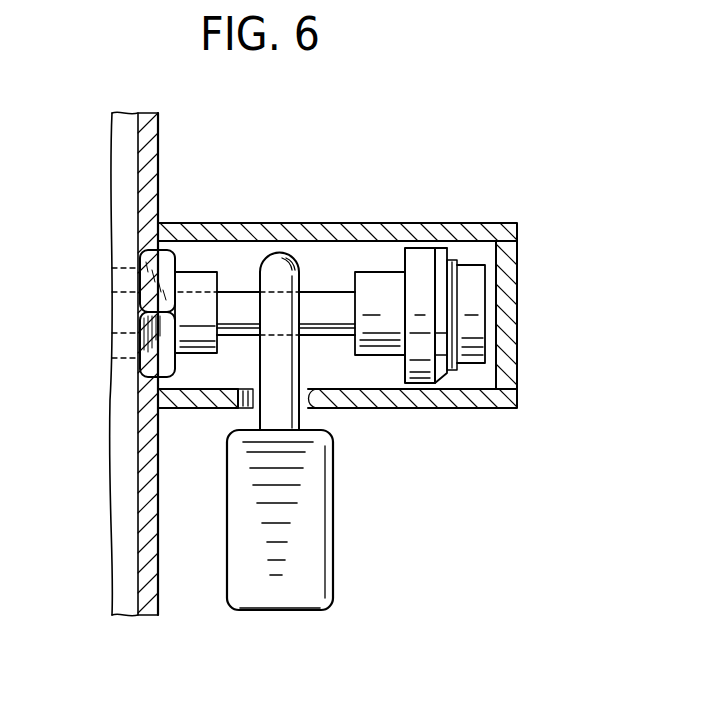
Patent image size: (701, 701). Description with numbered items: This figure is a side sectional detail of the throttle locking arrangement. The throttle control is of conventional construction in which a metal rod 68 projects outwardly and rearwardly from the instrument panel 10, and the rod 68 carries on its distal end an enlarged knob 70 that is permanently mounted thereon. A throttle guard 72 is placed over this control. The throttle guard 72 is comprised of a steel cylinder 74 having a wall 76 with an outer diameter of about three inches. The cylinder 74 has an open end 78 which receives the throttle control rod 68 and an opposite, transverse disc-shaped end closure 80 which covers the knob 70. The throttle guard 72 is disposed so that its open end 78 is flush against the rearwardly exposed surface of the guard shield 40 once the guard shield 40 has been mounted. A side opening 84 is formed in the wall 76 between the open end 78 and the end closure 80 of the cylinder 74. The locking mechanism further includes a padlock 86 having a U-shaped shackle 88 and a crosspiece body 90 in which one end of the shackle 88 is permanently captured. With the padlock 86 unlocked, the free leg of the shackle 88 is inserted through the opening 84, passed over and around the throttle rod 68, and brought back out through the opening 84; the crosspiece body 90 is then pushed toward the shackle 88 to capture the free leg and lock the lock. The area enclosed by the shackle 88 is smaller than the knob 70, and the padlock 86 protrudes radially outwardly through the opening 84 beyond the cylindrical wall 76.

The instrument panel 10 is at (142, 158).
The guard shield 40 is at (165, 573).
The metal rod 68 is at (328, 296).
The enlarged knob 70 is at (422, 255).
The throttle guard 72 is at (462, 418).
The steel cylinder 74 is at (412, 410).
The cylindrical wall 76 is at (273, 223).
The open end 78 is at (165, 243).
The end closure 80 is at (517, 307).
The side opening 84 is at (309, 410).
The padlock 86 is at (342, 546).
The U-shaped shackle 88 is at (270, 362).
The crosspiece body 90 is at (268, 590).